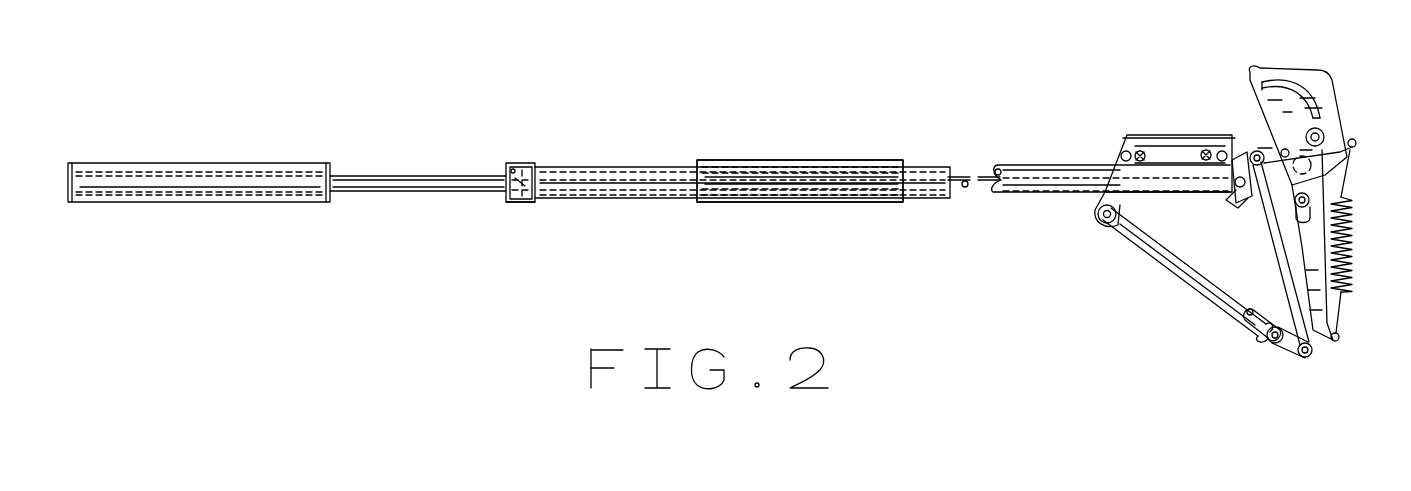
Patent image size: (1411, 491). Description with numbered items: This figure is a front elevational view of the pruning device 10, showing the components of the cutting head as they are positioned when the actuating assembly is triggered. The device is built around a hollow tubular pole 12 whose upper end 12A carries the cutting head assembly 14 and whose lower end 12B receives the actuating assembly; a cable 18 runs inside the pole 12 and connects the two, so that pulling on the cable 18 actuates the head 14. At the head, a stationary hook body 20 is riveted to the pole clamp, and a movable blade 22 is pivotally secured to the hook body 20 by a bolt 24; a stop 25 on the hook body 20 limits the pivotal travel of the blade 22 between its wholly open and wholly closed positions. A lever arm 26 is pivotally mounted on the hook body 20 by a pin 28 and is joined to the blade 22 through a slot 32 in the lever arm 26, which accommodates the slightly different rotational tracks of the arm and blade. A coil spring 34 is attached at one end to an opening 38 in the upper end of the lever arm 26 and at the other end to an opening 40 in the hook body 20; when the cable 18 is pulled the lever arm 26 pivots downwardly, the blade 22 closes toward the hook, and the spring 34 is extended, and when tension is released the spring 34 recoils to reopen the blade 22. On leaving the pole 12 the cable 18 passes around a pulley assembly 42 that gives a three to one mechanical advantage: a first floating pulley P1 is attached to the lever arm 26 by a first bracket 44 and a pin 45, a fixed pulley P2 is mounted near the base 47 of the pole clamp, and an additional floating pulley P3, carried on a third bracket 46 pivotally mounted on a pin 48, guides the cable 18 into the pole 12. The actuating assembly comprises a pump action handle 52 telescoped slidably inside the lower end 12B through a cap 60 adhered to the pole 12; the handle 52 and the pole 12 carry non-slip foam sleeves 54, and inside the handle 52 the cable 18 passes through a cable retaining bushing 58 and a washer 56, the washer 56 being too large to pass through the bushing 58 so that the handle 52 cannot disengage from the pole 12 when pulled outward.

The pruning device 10 is at (1198, 216).
The pole 12 is at (655, 166).
The upper end of the pole 12A is at (1153, 143).
The lower end of the pole 12B is at (812, 160).
The cutting head assembly 14 is at (1318, 196).
The cable 18 is at (990, 170).
The hook body 20 is at (1313, 70).
The blade 22 is at (1262, 160).
The bolt 24 is at (1323, 130).
The stop 25 is at (1291, 70).
The lever arm 26 is at (1323, 257).
The pin 28 is at (1312, 166).
The slot 32 is at (1318, 298).
The coil spring 34 is at (1350, 238).
The opening 38 is at (1337, 345).
The opening 40 is at (1352, 142).
The pulley assembly 42 is at (1142, 280).
The first bracket 44 is at (1243, 317).
The pin 45 is at (1312, 358).
The third bracket 46 is at (1237, 147).
The base of the pole clamp 47 is at (1123, 138).
The pin 48 is at (1250, 153).
The pump action handle 52 is at (398, 176).
The non-slip material 54 is at (255, 203).
The washer 56 is at (522, 172).
The cable retaining bushing 58 is at (510, 165).
The cap 60 is at (518, 203).
The first floating pulley P1 is at (1272, 343).
The fixed pulley P2 is at (1097, 213).
The floating guide pulley P3 is at (1250, 200).